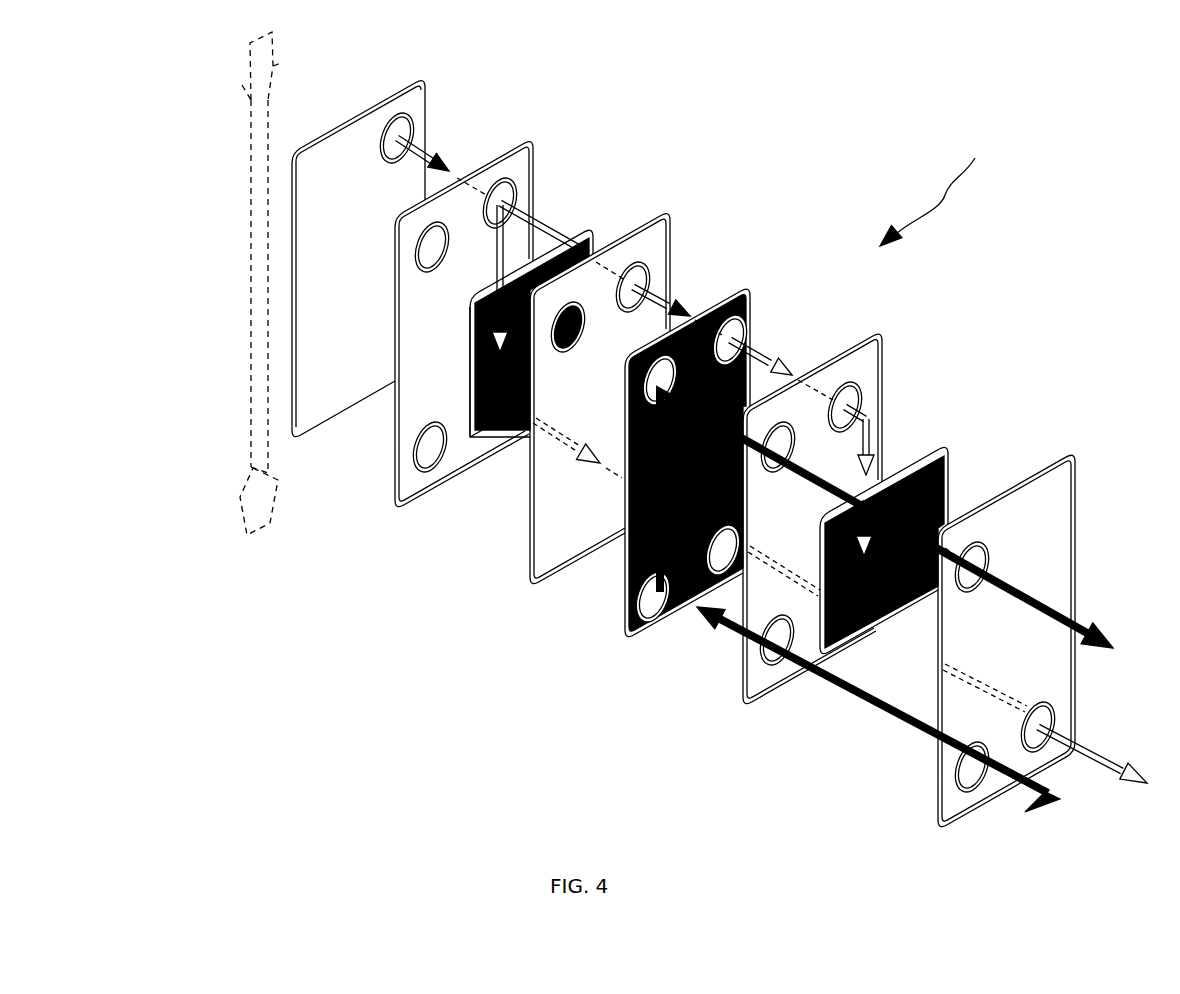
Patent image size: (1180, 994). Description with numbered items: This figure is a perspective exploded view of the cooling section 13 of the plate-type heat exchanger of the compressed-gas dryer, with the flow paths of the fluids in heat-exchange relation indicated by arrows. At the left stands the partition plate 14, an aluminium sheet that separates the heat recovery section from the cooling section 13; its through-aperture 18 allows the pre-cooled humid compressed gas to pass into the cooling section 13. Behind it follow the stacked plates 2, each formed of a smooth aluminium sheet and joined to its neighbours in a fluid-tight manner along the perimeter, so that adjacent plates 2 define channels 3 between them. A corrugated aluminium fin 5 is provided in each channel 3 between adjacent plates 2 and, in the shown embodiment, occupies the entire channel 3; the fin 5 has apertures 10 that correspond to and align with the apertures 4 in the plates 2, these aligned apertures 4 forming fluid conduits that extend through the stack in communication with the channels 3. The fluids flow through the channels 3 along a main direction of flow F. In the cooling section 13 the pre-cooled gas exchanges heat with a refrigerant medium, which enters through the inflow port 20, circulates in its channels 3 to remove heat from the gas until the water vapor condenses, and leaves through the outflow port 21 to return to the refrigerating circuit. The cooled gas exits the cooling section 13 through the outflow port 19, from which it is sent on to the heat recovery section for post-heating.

The main direction of flow F is at (252, 268).
The partition plate 14 is at (355, 133).
The through-aperture 18 is at (400, 122).
The plate 2 is at (513, 152).
The corrugated fin 5 is at (582, 232).
The channel 3 is at (505, 540).
The aperture 10 is at (648, 381).
The aperture 4 is at (430, 457).
The outflow port 21 is at (975, 556).
The outflow port 19 is at (1042, 716).
The inflow port 20 is at (976, 782).
The cooling section 13 is at (941, 189).